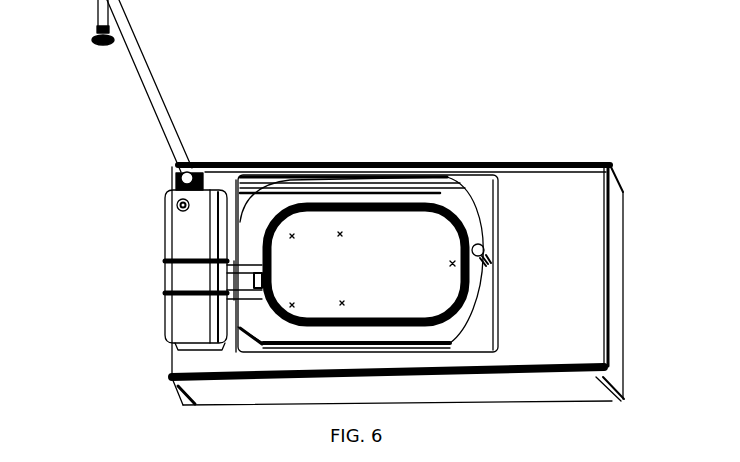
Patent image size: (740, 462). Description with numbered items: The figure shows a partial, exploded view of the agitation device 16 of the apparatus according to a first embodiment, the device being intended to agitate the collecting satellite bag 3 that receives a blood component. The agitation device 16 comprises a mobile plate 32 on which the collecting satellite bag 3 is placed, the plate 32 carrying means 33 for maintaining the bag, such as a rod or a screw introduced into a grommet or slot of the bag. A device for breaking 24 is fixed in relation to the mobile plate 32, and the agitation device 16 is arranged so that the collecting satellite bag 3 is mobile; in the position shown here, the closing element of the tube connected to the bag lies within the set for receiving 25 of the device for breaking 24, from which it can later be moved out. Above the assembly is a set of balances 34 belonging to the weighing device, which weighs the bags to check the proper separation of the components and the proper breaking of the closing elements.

The collecting satellite bag 3 is at (390, 233).
The agitation device 16 is at (545, 310).
The device for breaking 24 is at (177, 237).
The set for receiving 25 is at (178, 318).
The mobile plate 32 is at (444, 185).
The means for maintaining the bag on the plate 33 is at (487, 247).
The set of balances 34 is at (98, 14).